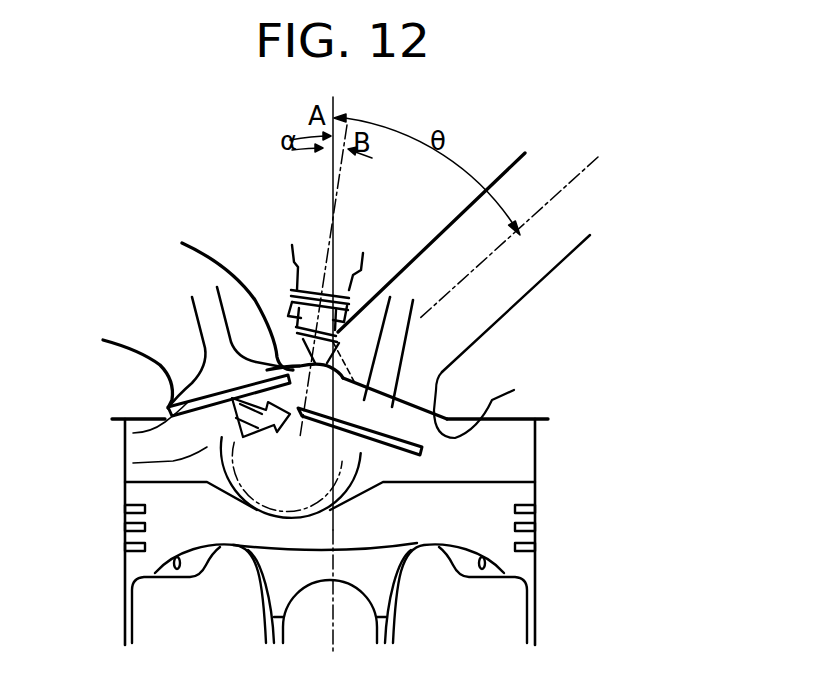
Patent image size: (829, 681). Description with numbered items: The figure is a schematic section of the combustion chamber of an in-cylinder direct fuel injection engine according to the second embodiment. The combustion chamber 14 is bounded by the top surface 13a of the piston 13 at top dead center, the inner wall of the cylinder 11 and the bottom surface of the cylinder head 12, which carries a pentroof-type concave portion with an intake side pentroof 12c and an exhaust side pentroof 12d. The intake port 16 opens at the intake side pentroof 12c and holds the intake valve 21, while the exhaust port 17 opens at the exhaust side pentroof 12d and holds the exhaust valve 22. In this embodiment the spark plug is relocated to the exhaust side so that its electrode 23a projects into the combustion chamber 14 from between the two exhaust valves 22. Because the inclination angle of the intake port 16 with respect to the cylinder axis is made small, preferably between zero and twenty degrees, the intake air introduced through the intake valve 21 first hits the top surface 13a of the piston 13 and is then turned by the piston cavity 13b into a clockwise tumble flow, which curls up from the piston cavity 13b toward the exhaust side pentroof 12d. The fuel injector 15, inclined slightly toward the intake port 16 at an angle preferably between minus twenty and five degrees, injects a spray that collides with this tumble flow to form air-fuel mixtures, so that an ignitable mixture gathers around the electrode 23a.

The cylinder 11 is at (536, 441).
The cylinder head 12 is at (513, 338).
The intake side pentroof 12c is at (501, 404).
The exhaust side pentroof 12d is at (133, 433).
The piston 13 is at (508, 522).
The top surface of the piston 13a is at (514, 480).
The piston cavity 13b is at (335, 503).
The combustion chamber 14 is at (133, 463).
The fuel injector 15 is at (315, 257).
The intake port 16 is at (440, 232).
The exhaust port 17 is at (197, 250).
The intake valve 21 is at (390, 350).
The exhaust valve 22 is at (200, 311).
The electrode of the spark plug 23a is at (275, 437).